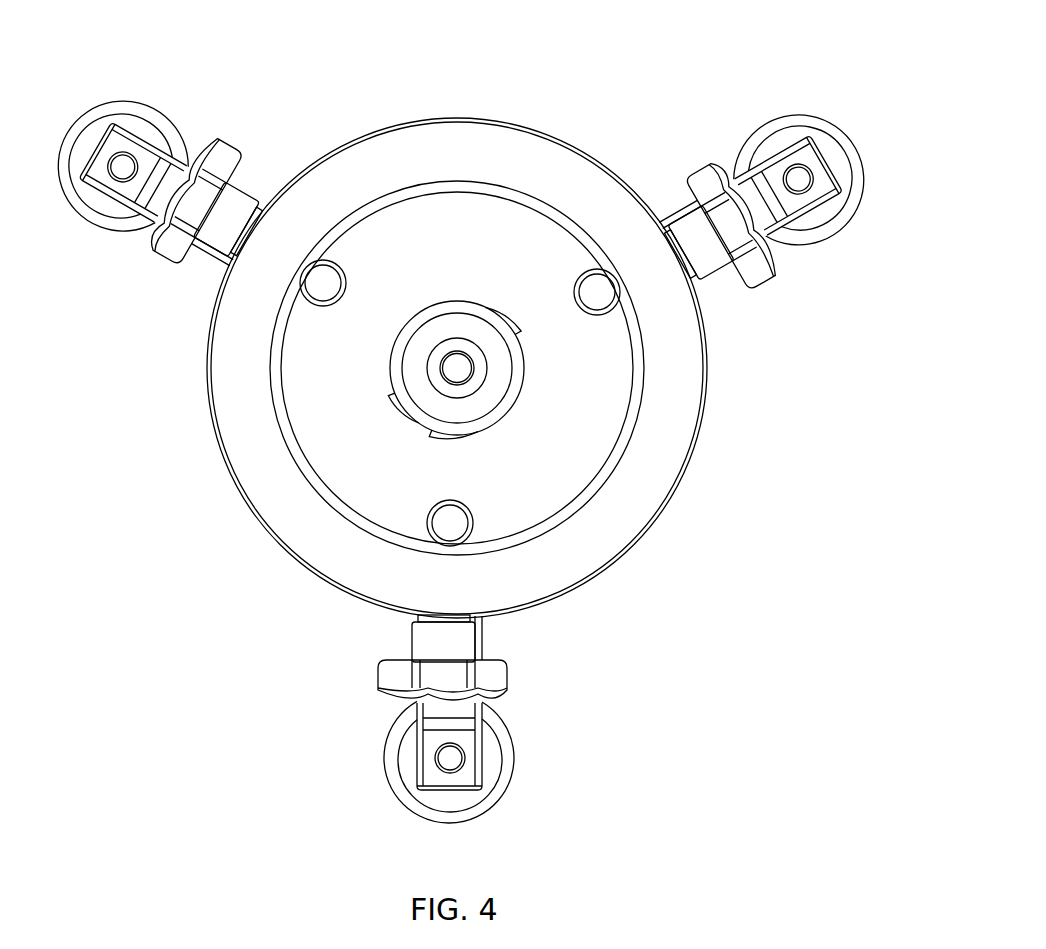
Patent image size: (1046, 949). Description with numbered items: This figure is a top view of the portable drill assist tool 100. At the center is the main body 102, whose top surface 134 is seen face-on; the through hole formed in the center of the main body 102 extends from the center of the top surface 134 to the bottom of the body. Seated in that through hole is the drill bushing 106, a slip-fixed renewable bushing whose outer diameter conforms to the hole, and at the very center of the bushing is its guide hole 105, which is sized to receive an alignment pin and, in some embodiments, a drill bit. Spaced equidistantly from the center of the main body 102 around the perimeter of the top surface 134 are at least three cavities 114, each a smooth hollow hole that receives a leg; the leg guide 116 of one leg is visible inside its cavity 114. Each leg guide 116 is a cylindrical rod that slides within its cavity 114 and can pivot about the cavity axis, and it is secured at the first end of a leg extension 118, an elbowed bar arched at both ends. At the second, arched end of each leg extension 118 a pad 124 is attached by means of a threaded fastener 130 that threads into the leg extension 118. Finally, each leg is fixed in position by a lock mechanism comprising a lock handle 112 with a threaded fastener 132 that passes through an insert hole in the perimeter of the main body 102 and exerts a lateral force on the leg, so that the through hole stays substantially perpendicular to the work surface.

The portable drill assist tool 100 is at (666, 74).
The main body 102 is at (690, 410).
The guide hole 105 is at (456, 357).
The drill bushing 106 is at (434, 333).
The lock handle 112 is at (205, 233).
The cavity 114 is at (432, 507).
The leg guide 116 is at (460, 522).
The leg extension 118 is at (467, 722).
The pad 124 is at (398, 745).
The threaded fastener 130 is at (799, 172).
The threaded fastener 132 is at (468, 623).
The top surface 134 is at (477, 208).